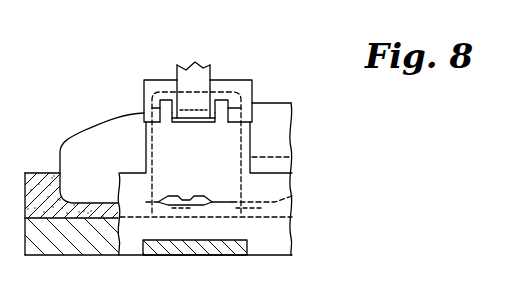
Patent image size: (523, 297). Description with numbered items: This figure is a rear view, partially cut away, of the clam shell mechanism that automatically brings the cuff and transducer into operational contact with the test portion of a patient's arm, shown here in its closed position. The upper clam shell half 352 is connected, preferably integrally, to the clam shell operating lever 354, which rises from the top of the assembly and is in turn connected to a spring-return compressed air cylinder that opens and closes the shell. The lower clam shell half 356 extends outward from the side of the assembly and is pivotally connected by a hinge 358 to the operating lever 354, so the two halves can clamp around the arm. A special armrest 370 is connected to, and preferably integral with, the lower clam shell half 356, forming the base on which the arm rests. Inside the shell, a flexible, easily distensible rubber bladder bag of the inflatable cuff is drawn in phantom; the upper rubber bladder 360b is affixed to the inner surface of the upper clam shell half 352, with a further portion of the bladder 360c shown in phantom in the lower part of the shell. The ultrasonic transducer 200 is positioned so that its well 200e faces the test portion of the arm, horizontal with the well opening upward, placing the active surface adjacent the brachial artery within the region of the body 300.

The transducer 200 is at (295, 150).
The well 200e is at (292, 157).
The base member 300 is at (288, 118).
The upper clam shell half 352 is at (160, 83).
The clam shell operating lever 354 is at (197, 78).
The lower clam shell half 356 is at (145, 144).
The hinge 358 is at (157, 110).
The upper rubber bladder 360b is at (240, 78).
The hidden recess outline (lower) 360c is at (293, 199).
The armrest 370 is at (280, 242).